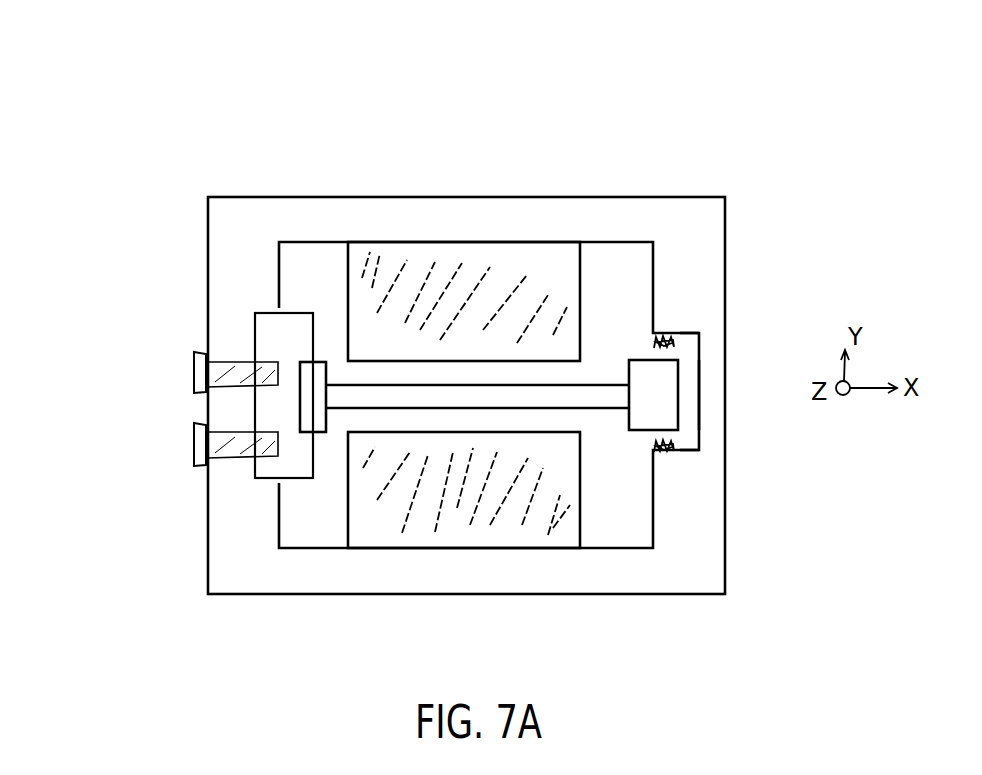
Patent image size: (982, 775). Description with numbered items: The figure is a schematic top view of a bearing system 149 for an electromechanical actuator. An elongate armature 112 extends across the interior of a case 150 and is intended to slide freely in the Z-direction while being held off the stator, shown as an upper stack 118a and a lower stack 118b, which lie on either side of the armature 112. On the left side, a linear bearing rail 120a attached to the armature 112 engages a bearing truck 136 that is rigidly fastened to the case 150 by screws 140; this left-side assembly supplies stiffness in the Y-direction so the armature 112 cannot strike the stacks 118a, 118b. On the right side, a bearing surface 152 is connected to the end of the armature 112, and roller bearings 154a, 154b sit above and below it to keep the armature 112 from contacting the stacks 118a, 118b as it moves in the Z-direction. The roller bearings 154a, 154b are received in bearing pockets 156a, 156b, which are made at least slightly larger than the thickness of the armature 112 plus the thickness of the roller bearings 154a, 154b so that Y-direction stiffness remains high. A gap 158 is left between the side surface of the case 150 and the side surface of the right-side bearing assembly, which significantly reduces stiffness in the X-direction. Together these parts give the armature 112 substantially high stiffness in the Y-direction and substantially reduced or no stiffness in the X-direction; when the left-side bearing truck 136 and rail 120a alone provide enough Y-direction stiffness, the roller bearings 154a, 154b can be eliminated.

The bearing system 149 is at (492, 107).
The case 150 is at (485, 217).
The bearing truck 136 is at (268, 332).
The screws 140 is at (185, 447).
The bearing rail 120a is at (318, 387).
The armature 112 is at (420, 396).
The bearing surface 152 is at (650, 378).
The stack 118a is at (399, 290).
The stack 118b is at (392, 503).
The roller bearing 154a is at (666, 340).
The roller bearing 154b is at (668, 455).
The bearing pocket 156a is at (690, 340).
The bearing pocket 156b is at (690, 450).
The gap 158 is at (688, 407).